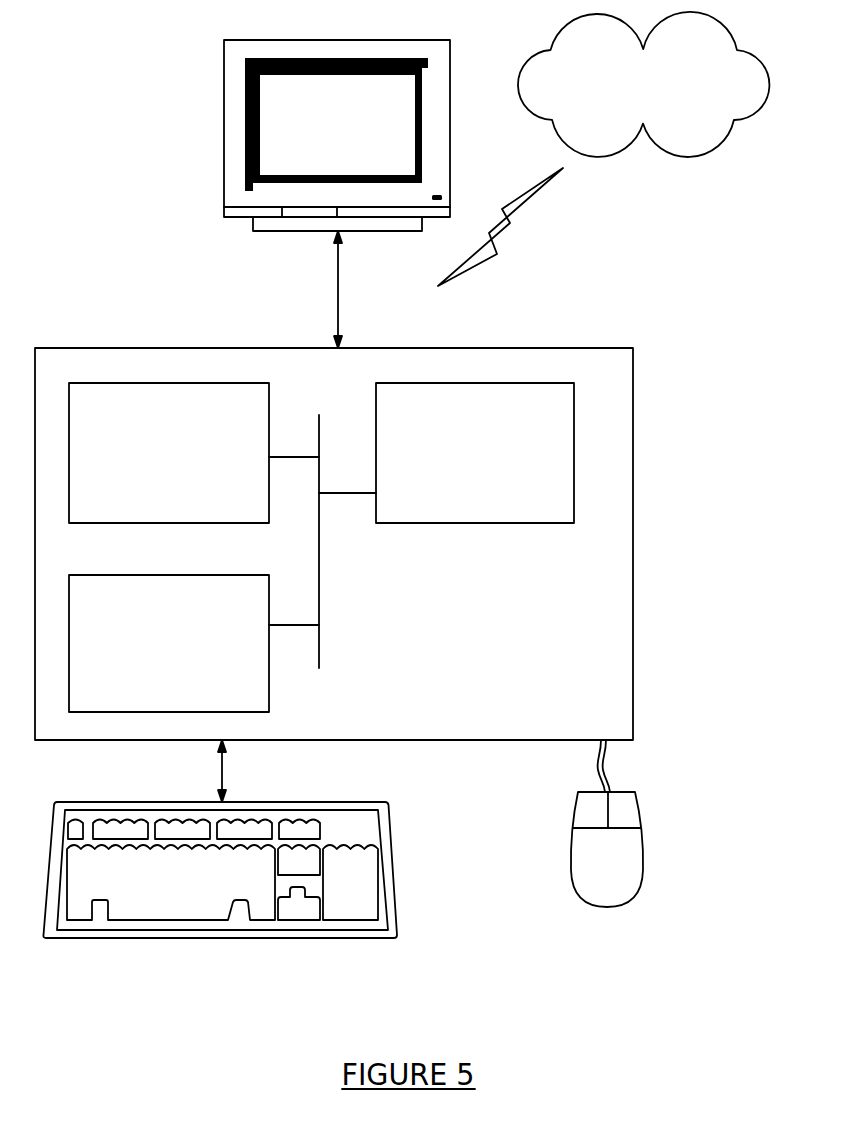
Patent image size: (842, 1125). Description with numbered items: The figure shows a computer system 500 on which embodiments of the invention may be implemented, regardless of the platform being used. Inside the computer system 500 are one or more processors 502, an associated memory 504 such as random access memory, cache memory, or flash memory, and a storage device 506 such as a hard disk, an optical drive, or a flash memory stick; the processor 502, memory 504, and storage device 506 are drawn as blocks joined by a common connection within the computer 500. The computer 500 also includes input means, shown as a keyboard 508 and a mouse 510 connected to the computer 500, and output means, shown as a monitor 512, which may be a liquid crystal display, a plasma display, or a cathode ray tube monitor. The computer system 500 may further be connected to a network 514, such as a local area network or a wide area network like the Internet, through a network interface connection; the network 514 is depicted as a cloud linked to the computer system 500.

The computer system 500 is at (667, 551).
The processor 502 is at (455, 468).
The memory 504 is at (152, 463).
The storage device 506 is at (149, 655).
The keyboard 508 is at (143, 903).
The mouse 510 is at (625, 865).
The monitor 512 is at (355, 140).
The network 514 is at (619, 105).